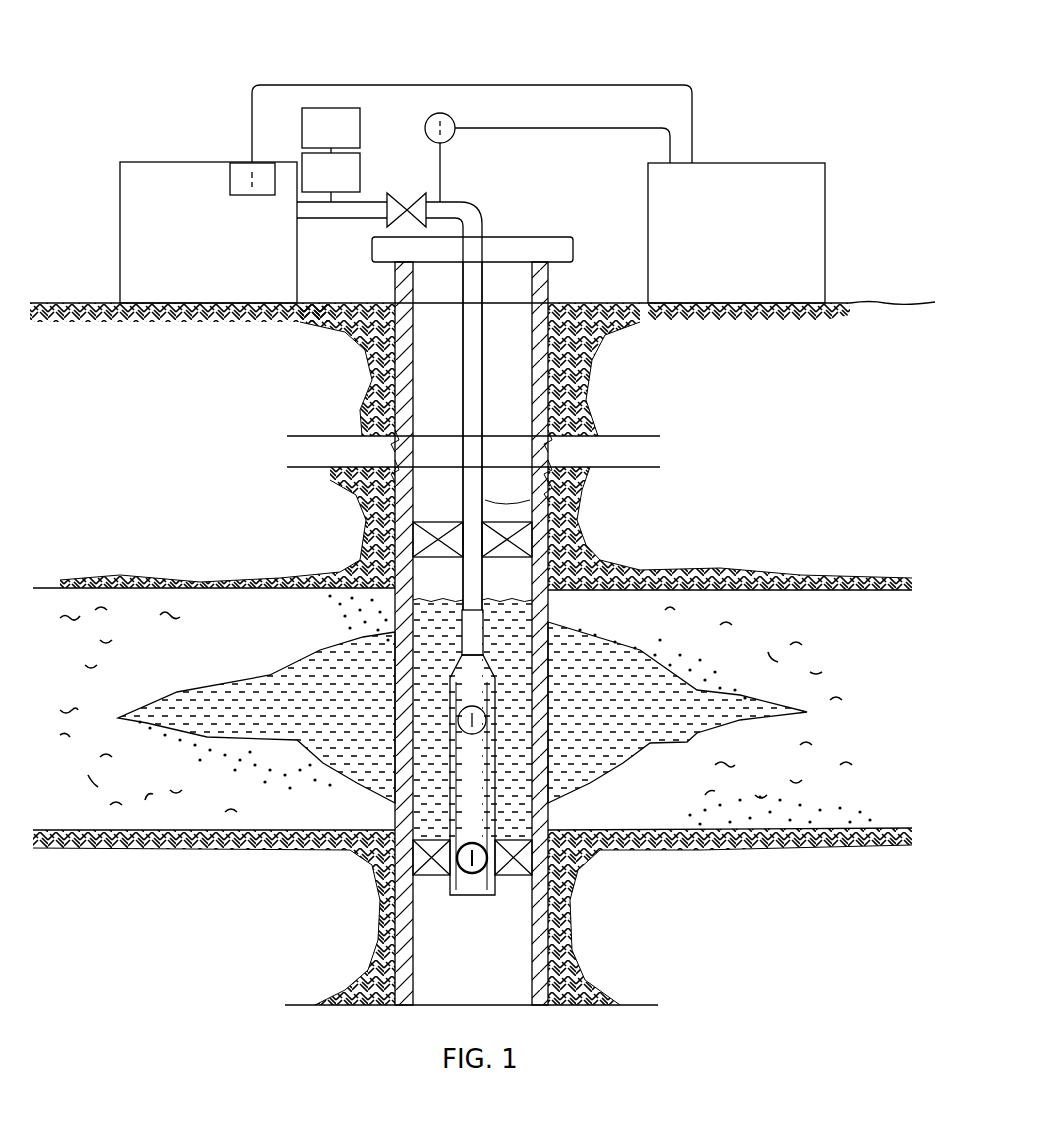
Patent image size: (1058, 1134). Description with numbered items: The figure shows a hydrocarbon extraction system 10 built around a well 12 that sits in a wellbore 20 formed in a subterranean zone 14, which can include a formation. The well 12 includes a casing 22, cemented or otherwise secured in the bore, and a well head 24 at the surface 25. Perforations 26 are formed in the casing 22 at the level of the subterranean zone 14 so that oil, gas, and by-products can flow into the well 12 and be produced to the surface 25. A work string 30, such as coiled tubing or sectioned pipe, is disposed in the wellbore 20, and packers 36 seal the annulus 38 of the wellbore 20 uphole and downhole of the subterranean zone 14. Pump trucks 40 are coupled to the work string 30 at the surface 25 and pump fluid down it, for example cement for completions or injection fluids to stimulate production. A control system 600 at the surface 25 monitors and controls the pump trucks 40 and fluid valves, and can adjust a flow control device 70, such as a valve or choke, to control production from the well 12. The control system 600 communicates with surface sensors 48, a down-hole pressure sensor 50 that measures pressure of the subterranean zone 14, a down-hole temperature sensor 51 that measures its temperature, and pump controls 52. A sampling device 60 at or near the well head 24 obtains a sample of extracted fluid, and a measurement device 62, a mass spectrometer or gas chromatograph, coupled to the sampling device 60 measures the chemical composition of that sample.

The hydrocarbon extraction system 10 is at (700, 73).
The well 12 is at (508, 208).
The subterranean zone 14 is at (828, 654).
The wellbore 20 is at (536, 330).
The casing 22 is at (414, 376).
The well head 24 is at (552, 236).
The surface 25 is at (600, 301).
The perforations 26 is at (396, 664).
The work string 30 is at (558, 490).
The packers 36 is at (540, 560).
The annulus 38 is at (520, 402).
The pump trucks 40 is at (168, 162).
The surface sensors 48 is at (424, 124).
The down-hole pressure sensor 50 is at (470, 744).
The down-hole temperature sensor 51 is at (472, 849).
The pump controls 52 is at (229, 180).
The sampling device 60 is at (331, 177).
The measurement device 62 is at (331, 130).
The flow control device 70 is at (413, 195).
The control system 600 is at (736, 233).